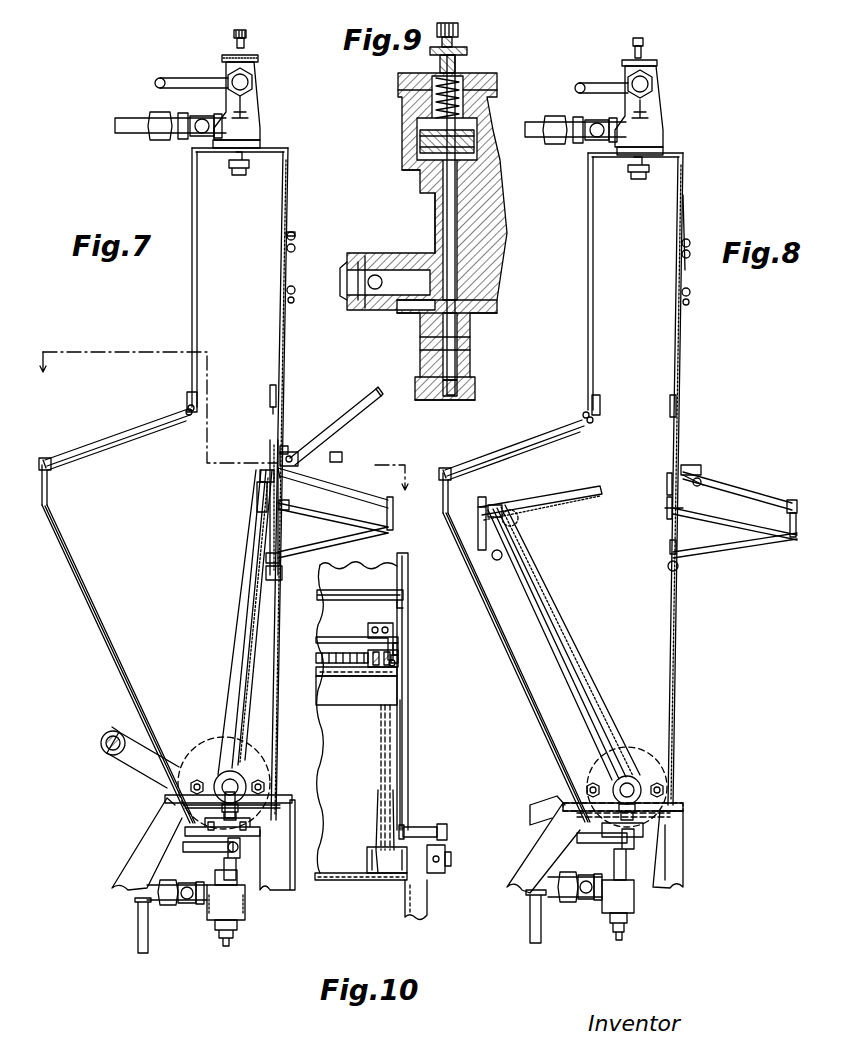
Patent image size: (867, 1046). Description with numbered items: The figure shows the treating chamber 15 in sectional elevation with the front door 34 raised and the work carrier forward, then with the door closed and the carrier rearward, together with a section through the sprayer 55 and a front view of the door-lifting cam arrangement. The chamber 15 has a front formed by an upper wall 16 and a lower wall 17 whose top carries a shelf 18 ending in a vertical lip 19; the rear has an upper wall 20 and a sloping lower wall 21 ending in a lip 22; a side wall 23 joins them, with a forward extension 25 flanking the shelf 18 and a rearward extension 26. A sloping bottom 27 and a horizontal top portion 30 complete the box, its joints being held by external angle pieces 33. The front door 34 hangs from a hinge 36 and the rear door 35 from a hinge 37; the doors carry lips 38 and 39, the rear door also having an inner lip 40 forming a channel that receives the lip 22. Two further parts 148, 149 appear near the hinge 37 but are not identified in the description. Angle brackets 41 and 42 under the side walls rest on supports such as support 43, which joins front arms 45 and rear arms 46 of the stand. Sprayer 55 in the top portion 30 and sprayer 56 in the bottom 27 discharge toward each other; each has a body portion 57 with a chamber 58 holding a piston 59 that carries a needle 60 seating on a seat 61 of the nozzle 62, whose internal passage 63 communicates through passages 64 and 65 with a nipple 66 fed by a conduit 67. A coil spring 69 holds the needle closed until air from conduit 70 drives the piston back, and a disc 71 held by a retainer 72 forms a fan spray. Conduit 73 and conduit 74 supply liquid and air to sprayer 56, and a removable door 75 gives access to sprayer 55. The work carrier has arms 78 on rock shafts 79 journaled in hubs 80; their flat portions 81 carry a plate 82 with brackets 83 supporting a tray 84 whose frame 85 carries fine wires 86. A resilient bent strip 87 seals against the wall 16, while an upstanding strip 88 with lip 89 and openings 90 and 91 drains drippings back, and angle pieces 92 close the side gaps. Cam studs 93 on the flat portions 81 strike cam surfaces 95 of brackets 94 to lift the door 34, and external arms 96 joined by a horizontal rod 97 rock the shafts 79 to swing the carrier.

In FIG. 7, the chamber 15 is at (171, 332).
In FIG. 8, the chamber 15 is at (698, 334).
In FIG. 7, the upper wall 16 is at (278, 310).
In FIG. 10, the upper wall 16 is at (388, 580).
In FIG. 8, the upper wall 16 is at (676, 336).
In FIG. 7, the lower wall 17 is at (280, 705).
In FIG. 10, the lower wall 17 is at (348, 770).
In FIG. 8, the lower wall 17 is at (680, 700).
In FIG. 7, the shelf 18 is at (352, 538).
In FIG. 10, the shelf 18 is at (368, 706).
In FIG. 8, the shelf 18 is at (700, 560).
In FIG. 7, the vertical lip 19 is at (396, 512).
In FIG. 10, the vertical lip 19 is at (345, 682).
In FIG. 8, the vertical lip 19 is at (796, 538).
In FIG. 7, the upper wall 20 is at (198, 248).
In FIG. 8, the upper wall 20 is at (594, 243).
In FIG. 7, the lower wall 21 is at (75, 590).
In FIG. 8, the lower wall 21 is at (545, 730).
In FIG. 7, the vertical lip 22 is at (50, 492).
In FIG. 8, the vertical lip 22 is at (450, 495).
In FIG. 7, the side wall 23 is at (282, 185).
In FIG. 8, the side wall 23 is at (680, 195).
In FIG. 7, the extension 25 is at (290, 568).
In FIG. 8, the extension 25 is at (742, 550).
In FIG. 7, the extension 26 is at (70, 540).
In FIG. 8, the extension 26 is at (485, 565).
In FIG. 10, the bottom 27 is at (348, 891).
In FIG. 8, the bottom 27 is at (685, 838).
In FIG. 7, the horizontal central portion 30 is at (268, 140).
In FIG. 8, the horizontal central portion 30 is at (672, 150).
In FIG. 7, the angle pieces 33 is at (285, 148).
In FIG. 10, the angle pieces 33 is at (404, 742).
In FIG. 8, the angle pieces 33 is at (684, 395).
In FIG. 7, the front door 34 is at (336, 412).
In FIG. 10, the front door 34 is at (385, 609).
In FIG. 8, the front door 34 is at (735, 482).
In FIG. 7, the rear door 35 is at (95, 445).
In FIG. 8, the rear door 35 is at (548, 435).
In FIG. 7, the hinge 36 is at (293, 450).
In FIG. 8, the hinge 36 is at (690, 462).
In FIG. 7, the hinge 37 is at (185, 402).
In FIG. 8, the hinge 37 is at (590, 428).
In FIG. 7, the lip 38 is at (378, 388).
In FIG. 10, the lip 38 is at (350, 598).
In FIG. 8, the lip 38 is at (797, 497).
In FIG. 7, the lip 39 is at (40, 460).
In FIG. 8, the lip 39 is at (442, 470).
In FIG. 7, the inner lip 40 is at (108, 455).
In FIG. 8, the inner lip 40 is at (535, 445).
In FIG. 7, the angle bracket 41 is at (276, 772).
In FIG. 8, the angle bracket 41 is at (585, 779).
In FIG. 10, the angle bracket 42 is at (390, 875).
In FIG. 7, the support 43 is at (195, 800).
In FIG. 8, the support 43 is at (623, 820).
In FIG. 7, the front arm 45 is at (272, 890).
In FIG. 10, the front arm 45 is at (410, 925).
In FIG. 8, the front arm 45 is at (690, 875).
In FIG. 7, the rear arm 46 is at (148, 855).
In FIG. 8, the rear arm 46 is at (540, 862).
In FIG. 7, the sprayer 55 is at (272, 59).
In FIG. 9, the sprayer 55 is at (502, 65).
In FIG. 8, the sprayer 55 is at (672, 75).
In FIG. 7, the sprayer 56 is at (203, 927).
In FIG. 8, the sprayer 56 is at (650, 906).
In FIG. 7, the body portion 57 is at (265, 100).
In FIG. 9, the body portion 57 is at (485, 205).
In FIG. 8, the body portion 57 is at (668, 107).
In FIG. 9, the chamber 58 is at (402, 178).
In FIG. 9, the piston 59 is at (418, 130).
In FIG. 9, the needle 60 is at (446, 218).
In FIG. 9, the seat 61 is at (473, 380).
In FIG. 9, the nozzle 62 is at (472, 360).
In FIG. 9, the internal passage 63 is at (420, 352).
In FIG. 9, the passage 64 is at (460, 285).
In FIG. 9, the passage 65 is at (358, 258).
In FIG. 9, the nipple 66 is at (358, 310).
In FIG. 7, the conduit 67 is at (128, 117).
In FIG. 8, the conduit 67 is at (536, 121).
In FIG. 9, the coil spring 69 is at (425, 82).
In FIG. 7, the conduit 70 is at (185, 77).
In FIG. 8, the conduit 70 is at (594, 82).
In FIG. 9, the disc 71 is at (452, 400).
In FIG. 7, the retainer 72 is at (234, 180).
In FIG. 9, the retainer 72 is at (476, 392).
In FIG. 8, the retainer 72 is at (640, 185).
In FIG. 7, the conduit 73 is at (214, 852).
In FIG. 8, the conduit 73 is at (600, 845).
In FIG. 7, the conduit 74 is at (138, 930).
In FIG. 8, the conduit 74 is at (532, 925).
In FIG. 7, the removable door 75 is at (288, 230).
In FIG. 8, the removable door 75 is at (689, 230).
In FIG. 7, the arm 78 is at (245, 612).
In FIG. 10, the arm 78 is at (398, 810).
In FIG. 8, the arm 78 is at (530, 600).
In FIG. 7, the rock shaft 79 is at (208, 775).
In FIG. 10, the rock shaft 79 is at (452, 858).
In FIG. 8, the rock shaft 79 is at (633, 780).
In FIG. 7, the hub 80 is at (225, 772).
In FIG. 8, the hub 80 is at (632, 776).
In FIG. 7, the flat portion 81 is at (258, 498).
In FIG. 10, the flat portion 81 is at (402, 648).
In FIG. 8, the flat portion 81 is at (505, 553).
In FIG. 7, the plate 82 is at (260, 476).
In FIG. 8, the plate 82 is at (500, 540).
In FIG. 7, the bracket 83 is at (312, 522).
In FIG. 10, the bracket 83 is at (372, 652).
In FIG. 8, the bracket 83 is at (560, 512).
In FIG. 10, the tray 84 is at (316, 660).
In FIG. 7, the rectangular frame 85 is at (340, 490).
In FIG. 8, the rectangular frame 85 is at (580, 492).
In FIG. 7, the fine wires 86 is at (318, 476).
In FIG. 8, the fine wires 86 is at (555, 500).
In FIG. 7, the bent strip 87 is at (280, 450).
In FIG. 10, the bent strip 87 is at (316, 641).
In FIG. 8, the bent strip 87 is at (486, 500).
In FIG. 7, the upstanding strip 88 is at (266, 548).
In FIG. 8, the upstanding strip 88 is at (668, 547).
In FIG. 8, the lip 89 is at (735, 522).
In FIG. 8, the openings 90 is at (780, 522).
In FIG. 8, the openings 91 is at (668, 572).
In FIG. 10, the vertical angle pieces 92 is at (402, 658).
In FIG. 8, the vertical angle pieces 92 is at (666, 484).
In FIG. 7, the cam stud 93 is at (284, 512).
In FIG. 10, the cam stud 93 is at (398, 664).
In FIG. 8, the cam stud 93 is at (515, 510).
In FIG. 7, the bracket 94 is at (338, 452).
In FIG. 8, the bracket 94 is at (690, 497).
In FIG. 10, the cam surface 95 is at (396, 634).
In FIG. 8, the cam surface 95 is at (666, 510).
In FIG. 7, the arm 96 is at (138, 760).
In FIG. 10, the arm 96 is at (450, 834).
In FIG. 8, the arm 96 is at (535, 815).
In FIG. 7, the horizontal rod 97 is at (100, 745).
In FIG. 10, the horizontal rod 97 is at (410, 830).
In FIG. 7, the hinge pin 148 is at (192, 420).
In FIG. 8, the hinge pin 148 is at (600, 400).
In FIG. 7, the hinge leaf 149 is at (266, 390).
In FIG. 8, the hinge leaf 149 is at (668, 400).